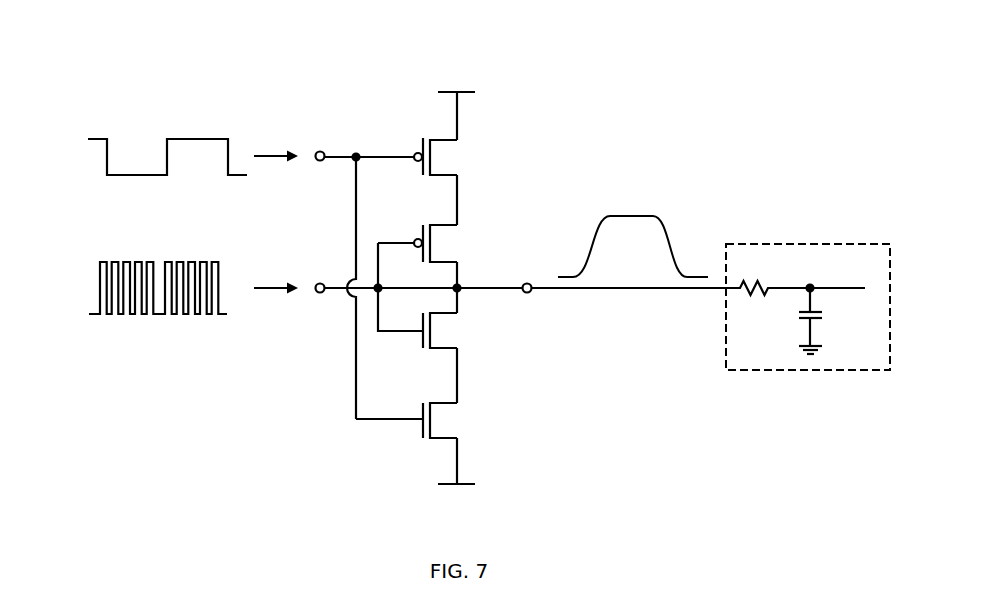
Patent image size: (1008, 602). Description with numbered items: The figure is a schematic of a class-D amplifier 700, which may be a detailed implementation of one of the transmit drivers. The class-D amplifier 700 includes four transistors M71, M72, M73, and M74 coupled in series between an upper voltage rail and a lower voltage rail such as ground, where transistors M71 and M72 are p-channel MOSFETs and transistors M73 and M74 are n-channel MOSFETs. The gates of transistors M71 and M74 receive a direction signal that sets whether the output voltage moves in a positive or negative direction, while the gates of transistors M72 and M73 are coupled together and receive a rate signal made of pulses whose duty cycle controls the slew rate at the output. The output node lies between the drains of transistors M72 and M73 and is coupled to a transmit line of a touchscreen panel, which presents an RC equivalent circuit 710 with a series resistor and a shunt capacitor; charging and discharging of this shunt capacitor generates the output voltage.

The class-D amplifier 700 is at (578, 77).
The RC equivalent circuit 710 is at (803, 244).
The transistor M71 is at (405, 156).
The transistor M72 is at (432, 243).
The transistor M73 is at (454, 330).
The transistor M74 is at (454, 420).